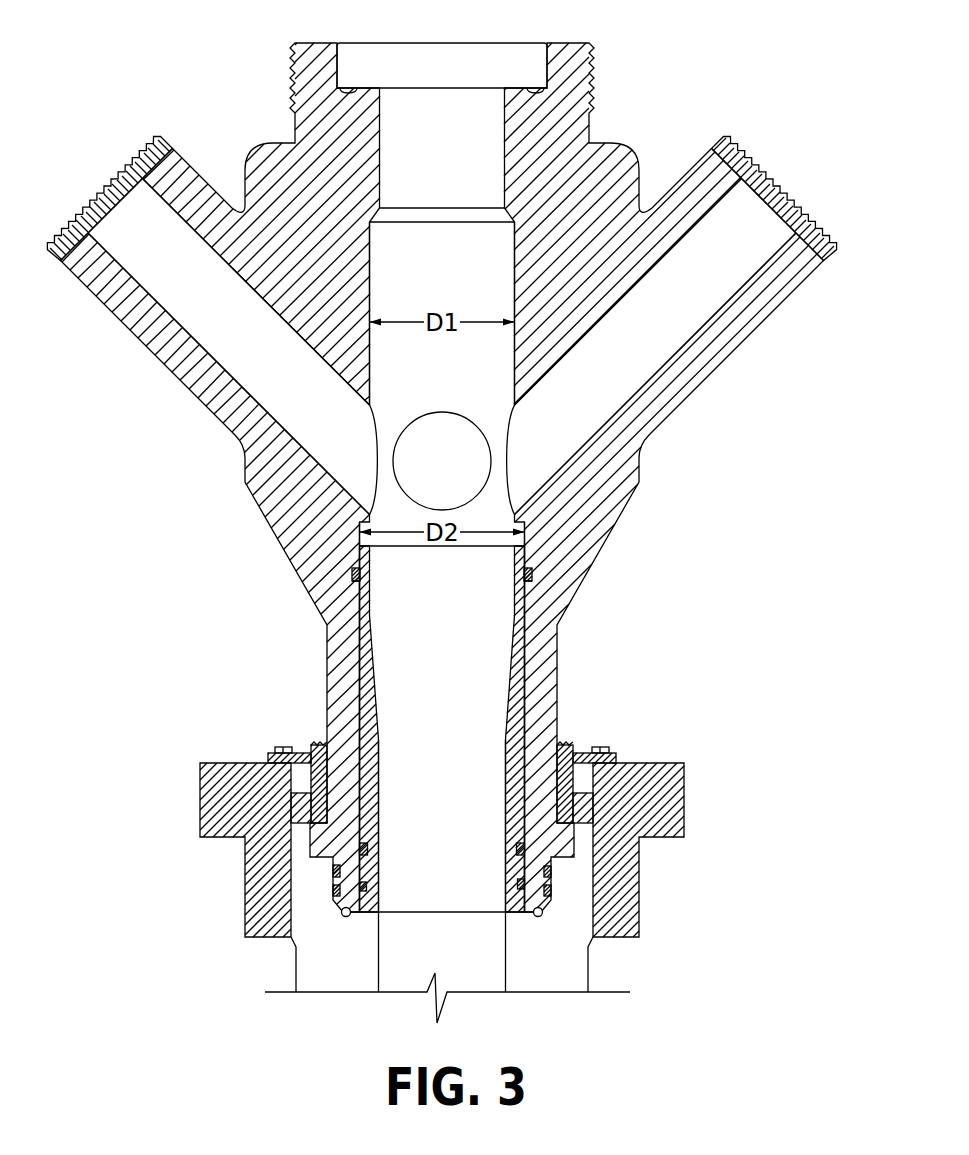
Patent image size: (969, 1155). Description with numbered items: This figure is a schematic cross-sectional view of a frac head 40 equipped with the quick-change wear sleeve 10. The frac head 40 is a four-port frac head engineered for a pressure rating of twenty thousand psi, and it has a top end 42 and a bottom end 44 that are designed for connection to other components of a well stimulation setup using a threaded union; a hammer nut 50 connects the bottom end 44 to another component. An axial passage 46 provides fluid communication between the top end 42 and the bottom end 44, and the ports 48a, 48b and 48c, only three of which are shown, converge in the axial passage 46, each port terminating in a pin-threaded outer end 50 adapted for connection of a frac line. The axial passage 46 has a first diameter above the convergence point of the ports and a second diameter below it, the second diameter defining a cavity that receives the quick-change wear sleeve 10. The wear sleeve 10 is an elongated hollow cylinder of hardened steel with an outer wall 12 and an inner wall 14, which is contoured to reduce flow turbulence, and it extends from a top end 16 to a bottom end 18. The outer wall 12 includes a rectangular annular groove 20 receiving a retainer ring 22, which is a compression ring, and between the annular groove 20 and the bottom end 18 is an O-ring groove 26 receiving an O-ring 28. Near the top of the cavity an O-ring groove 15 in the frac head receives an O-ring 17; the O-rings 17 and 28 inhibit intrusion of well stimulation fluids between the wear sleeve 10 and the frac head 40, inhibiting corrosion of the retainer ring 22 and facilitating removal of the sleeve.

The quick-change wear sleeve 10 is at (432, 755).
The outer wall 12 is at (523, 672).
The inner wall 14 is at (507, 683).
The O-ring groove 15 is at (360, 587).
The top end 16 is at (457, 548).
The O-ring 17 is at (362, 573).
The bottom end 18 is at (420, 913).
The annular groove 20 is at (516, 848).
The retainer ring 22 is at (367, 846).
The O-ring groove 26 is at (517, 883).
The O-ring 28 is at (367, 887).
The frac head 40 is at (656, 491).
The top end 42 is at (588, 45).
The bottom end 44 is at (546, 915).
The axial passage 46 is at (428, 277).
The port 48a is at (182, 307).
The port 48b is at (435, 428).
The port 48c is at (682, 322).
The pin-threaded outer end 50 is at (162, 140).